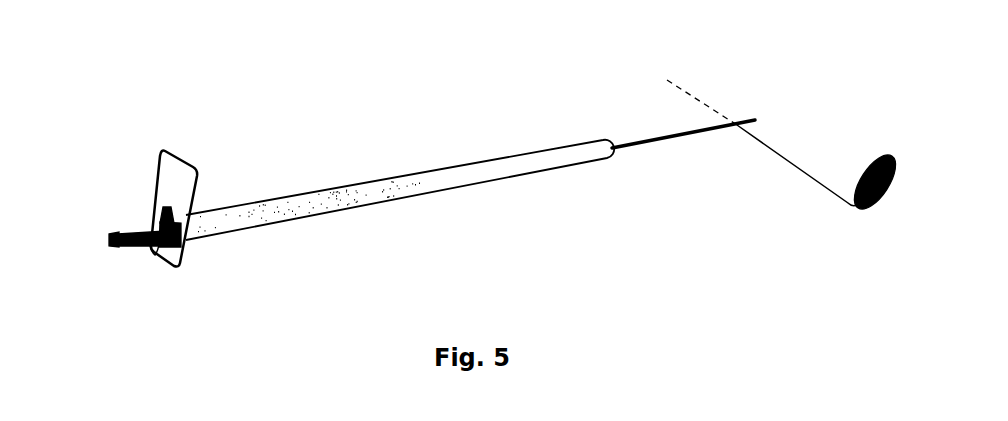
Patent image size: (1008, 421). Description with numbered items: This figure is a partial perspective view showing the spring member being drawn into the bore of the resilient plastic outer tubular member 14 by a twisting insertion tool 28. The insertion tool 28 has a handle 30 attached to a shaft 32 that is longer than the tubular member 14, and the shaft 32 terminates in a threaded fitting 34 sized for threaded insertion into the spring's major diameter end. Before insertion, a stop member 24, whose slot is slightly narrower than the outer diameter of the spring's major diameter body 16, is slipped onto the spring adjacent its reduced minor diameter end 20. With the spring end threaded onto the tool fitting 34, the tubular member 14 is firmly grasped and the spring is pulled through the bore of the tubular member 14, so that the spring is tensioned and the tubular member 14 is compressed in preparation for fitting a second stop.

The outer tubular member 14 is at (385, 180).
The major diameter body 16 is at (155, 250).
The reduced minor diameter end 20 is at (120, 253).
The stop member 24 is at (197, 178).
The insertion tool 28 is at (677, 35).
The handle 30 is at (830, 182).
The shaft 32 is at (658, 145).
The threaded fitting 34 is at (442, 180).